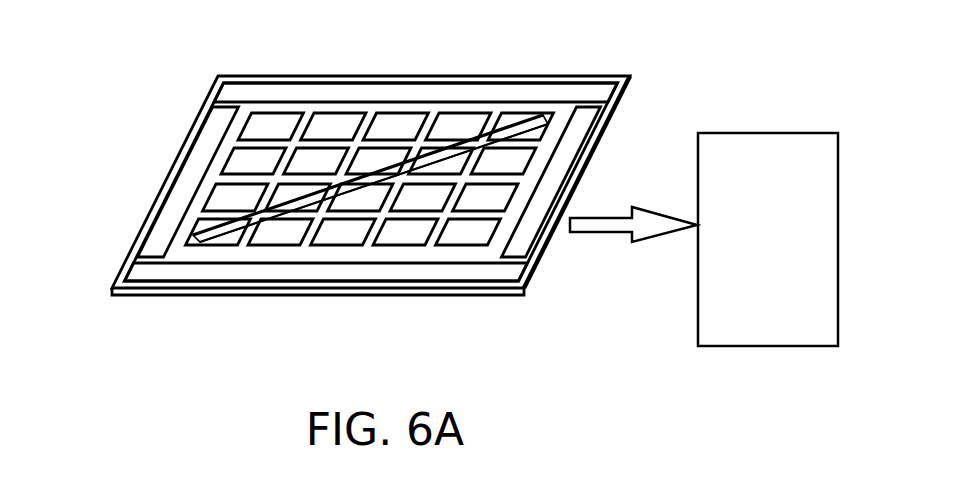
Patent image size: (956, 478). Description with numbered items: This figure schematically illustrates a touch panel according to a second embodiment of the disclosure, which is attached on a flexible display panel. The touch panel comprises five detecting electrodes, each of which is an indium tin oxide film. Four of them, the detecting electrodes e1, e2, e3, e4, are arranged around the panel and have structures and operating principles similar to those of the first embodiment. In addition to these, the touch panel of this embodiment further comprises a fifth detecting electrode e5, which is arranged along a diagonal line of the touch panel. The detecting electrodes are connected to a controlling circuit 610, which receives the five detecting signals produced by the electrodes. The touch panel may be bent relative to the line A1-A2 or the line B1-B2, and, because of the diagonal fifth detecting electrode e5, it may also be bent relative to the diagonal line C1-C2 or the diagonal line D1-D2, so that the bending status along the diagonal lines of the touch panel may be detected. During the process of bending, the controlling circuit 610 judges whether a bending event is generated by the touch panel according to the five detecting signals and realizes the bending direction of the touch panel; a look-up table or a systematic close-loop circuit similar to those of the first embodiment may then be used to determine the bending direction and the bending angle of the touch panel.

The detecting electrode e1 is at (340, 95).
The detecting electrode e2 is at (394, 277).
The detecting electrode e3 is at (153, 250).
The detecting electrode e4 is at (525, 242).
The fifth detecting electrode e5 is at (543, 113).
The controlling circuit 610 is at (783, 140).
The line A1-A2 endpoint A1 is at (422, 66).
The line A1-A2 endpoint A2 is at (318, 300).
The line B1-B2 endpoint B1 is at (138, 183).
The line B1-B2 endpoint B2 is at (597, 183).
The line C1-C2 endpoint C1 is at (637, 72).
The line C1-C2 endpoint C2 is at (103, 292).
The line D1-D2 endpoint D1 is at (210, 68).
The line D1-D2 endpoint D2 is at (536, 304).